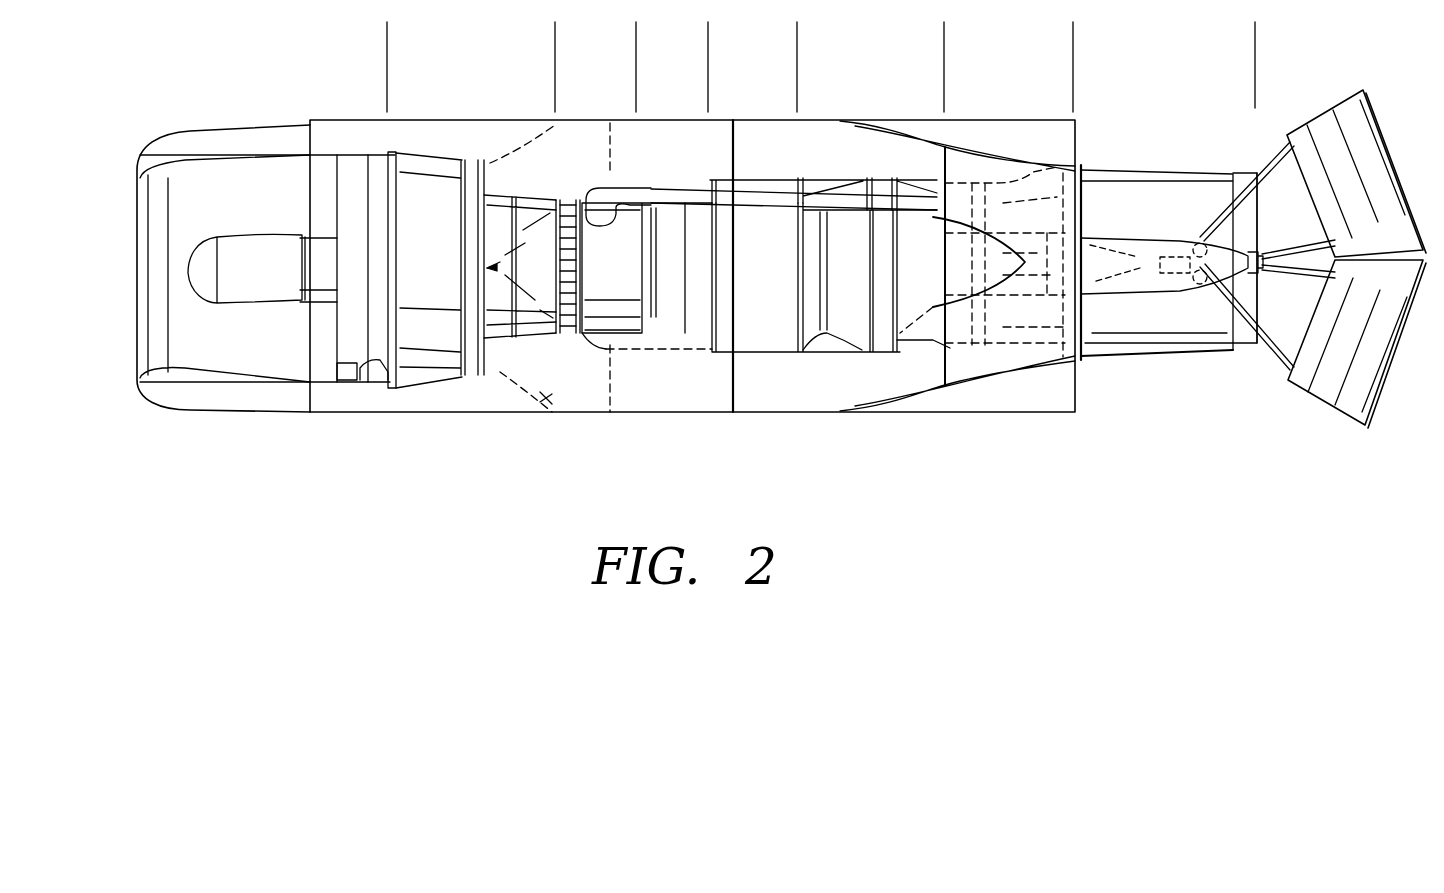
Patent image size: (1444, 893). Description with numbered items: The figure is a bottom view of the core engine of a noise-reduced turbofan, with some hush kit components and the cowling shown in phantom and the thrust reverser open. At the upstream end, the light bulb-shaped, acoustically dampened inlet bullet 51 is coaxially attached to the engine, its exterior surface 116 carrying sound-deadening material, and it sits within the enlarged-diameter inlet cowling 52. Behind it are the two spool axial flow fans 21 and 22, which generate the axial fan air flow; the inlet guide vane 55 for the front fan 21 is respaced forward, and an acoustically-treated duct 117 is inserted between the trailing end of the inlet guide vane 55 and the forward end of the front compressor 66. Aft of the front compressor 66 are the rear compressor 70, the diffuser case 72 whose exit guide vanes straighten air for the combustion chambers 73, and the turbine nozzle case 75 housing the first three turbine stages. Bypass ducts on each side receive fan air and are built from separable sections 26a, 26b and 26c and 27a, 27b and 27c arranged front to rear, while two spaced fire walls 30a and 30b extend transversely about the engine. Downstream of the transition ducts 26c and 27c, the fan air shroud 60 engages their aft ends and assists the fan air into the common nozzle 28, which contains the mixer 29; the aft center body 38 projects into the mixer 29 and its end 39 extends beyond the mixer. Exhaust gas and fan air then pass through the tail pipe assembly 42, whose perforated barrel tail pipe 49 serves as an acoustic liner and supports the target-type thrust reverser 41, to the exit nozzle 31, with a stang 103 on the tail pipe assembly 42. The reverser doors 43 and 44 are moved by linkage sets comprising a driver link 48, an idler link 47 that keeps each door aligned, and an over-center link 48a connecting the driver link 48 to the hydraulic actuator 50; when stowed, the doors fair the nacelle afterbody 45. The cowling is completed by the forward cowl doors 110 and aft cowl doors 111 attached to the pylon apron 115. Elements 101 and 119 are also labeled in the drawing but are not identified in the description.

The front axial flow fan 21 is at (433, 230).
The second axial flow fan 22 is at (387, 99).
The front bypass duct section 26a is at (530, 418).
The middle bypass duct section 26b is at (645, 404).
The rear bypass duct section 26c is at (805, 405).
The front bypass duct section 27a is at (580, 168).
The middle bypass duct section 27b is at (688, 165).
The rear bypass duct section 27c is at (818, 161).
The common nozzle 28 is at (1073, 42).
The mixer 29 is at (1048, 178).
The fire wall 30a is at (732, 372).
The fire wall 30b is at (942, 362).
The exit nozzle 31 is at (1244, 352).
The aft center body 38 is at (1093, 275).
The end of aft center body 39 is at (1141, 272).
The target-type thrust reverser 41 is at (1294, 400).
The tail pipe assembly 42 is at (1255, 42).
The reverser door 43 is at (1363, 341).
The reverser door 44 is at (1363, 199).
The nacelle afterbody 45 is at (1171, 162).
The idler link 47 is at (1296, 258).
The driver link 48 is at (1272, 360).
The over-center link 48a is at (1188, 248).
The barrel tail pipe 49 is at (1197, 357).
The hydraulic actuator 50 is at (1178, 280).
The inlet bullet 51 is at (180, 265).
The inlet cowling 52 is at (242, 128).
The inlet guide vane 55 is at (342, 380).
The fan air shroud 60 is at (985, 155).
The front compressor 66 is at (555, 42).
The rear compressor 70 is at (636, 42).
The diffuser case 72 is at (636, 42).
The combustion chambers 73 is at (708, 42).
The turbine nozzle case 75 is at (944, 42).
The mixer wall 101 is at (1078, 170).
The stang 103 is at (1133, 237).
The forward cowl doors 110 is at (388, 413).
The aft cowl doors 111 is at (1066, 370).
The pylon apron 115 is at (1010, 412).
The exterior surface of center body 116 is at (252, 232).
The acoustically-treated duct 117 is at (368, 383).
The drive shaft 119 is at (758, 205).